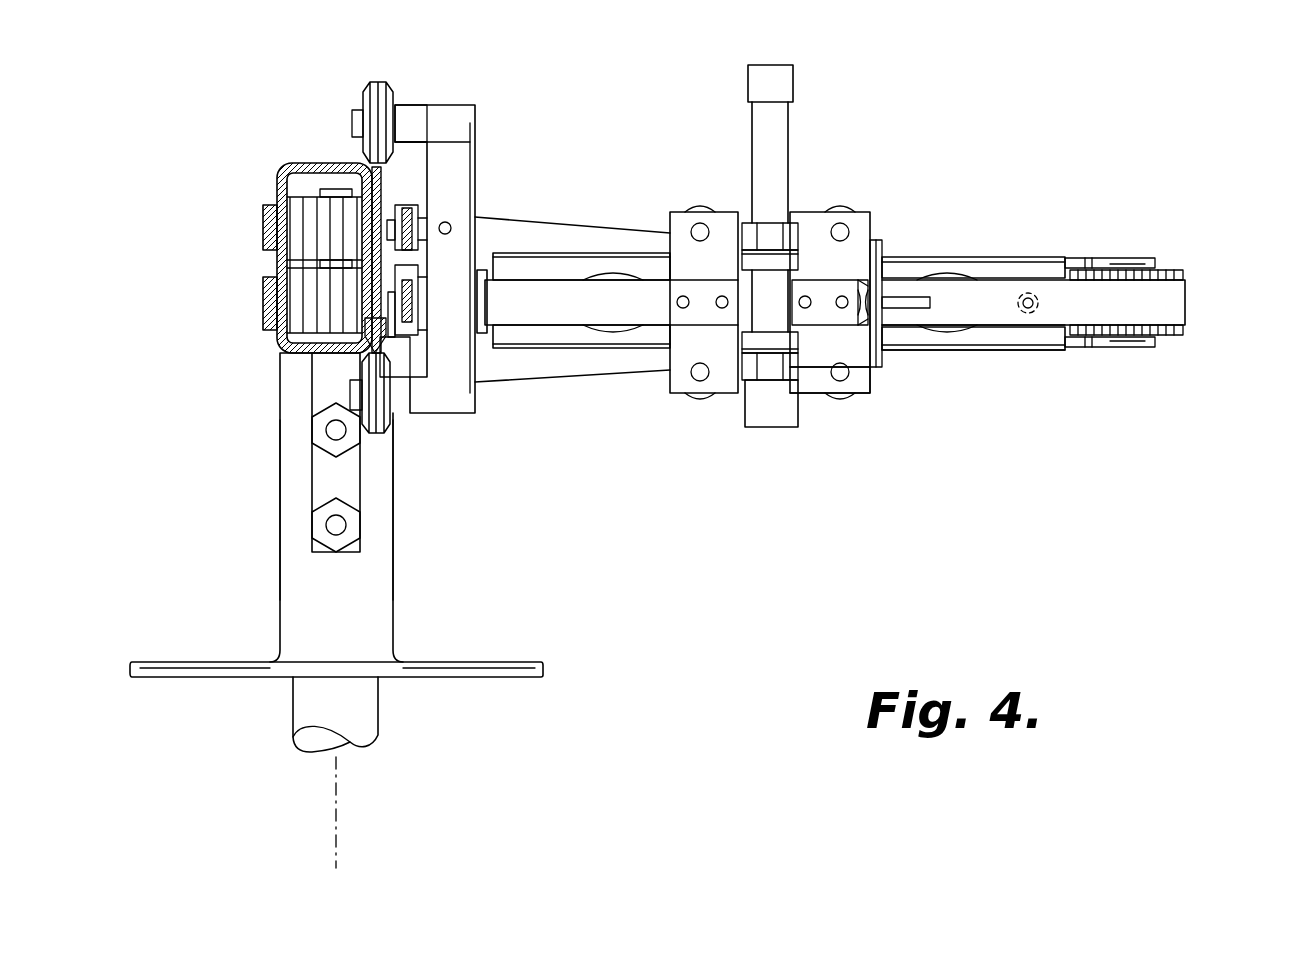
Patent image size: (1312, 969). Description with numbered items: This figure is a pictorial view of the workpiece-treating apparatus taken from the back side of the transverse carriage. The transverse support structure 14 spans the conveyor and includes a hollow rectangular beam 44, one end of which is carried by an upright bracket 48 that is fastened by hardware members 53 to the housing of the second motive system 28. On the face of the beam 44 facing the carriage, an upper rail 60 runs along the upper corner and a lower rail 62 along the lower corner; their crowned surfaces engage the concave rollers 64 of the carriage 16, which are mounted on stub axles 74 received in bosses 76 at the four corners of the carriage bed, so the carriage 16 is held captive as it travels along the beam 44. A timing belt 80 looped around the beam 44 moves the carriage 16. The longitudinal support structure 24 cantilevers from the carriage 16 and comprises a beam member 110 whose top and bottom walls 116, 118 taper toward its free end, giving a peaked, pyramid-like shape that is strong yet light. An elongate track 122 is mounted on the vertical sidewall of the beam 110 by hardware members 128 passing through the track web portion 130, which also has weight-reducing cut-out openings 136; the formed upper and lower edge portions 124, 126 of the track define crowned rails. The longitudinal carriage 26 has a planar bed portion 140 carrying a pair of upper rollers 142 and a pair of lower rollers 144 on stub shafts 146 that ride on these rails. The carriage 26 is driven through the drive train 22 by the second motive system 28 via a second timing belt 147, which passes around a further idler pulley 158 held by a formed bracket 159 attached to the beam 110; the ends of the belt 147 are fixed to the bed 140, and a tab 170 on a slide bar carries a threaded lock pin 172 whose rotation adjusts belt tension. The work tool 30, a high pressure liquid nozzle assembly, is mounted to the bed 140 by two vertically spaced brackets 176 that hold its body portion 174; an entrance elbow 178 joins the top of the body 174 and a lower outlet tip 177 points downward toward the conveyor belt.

The transverse support structure 14 is at (277, 164).
The carriage 16 is at (448, 102).
The drive train 22 is at (252, 257).
The longitudinal support structure 24 is at (321, 155).
The longitudinal carriage 26 is at (872, 408).
The second motive system 28 is at (400, 548).
The work tool 30 is at (805, 102).
The beam structure 44 is at (277, 187).
The bracket 48 is at (320, 395).
The hardware members 53 is at (352, 513).
The upper rail 60 is at (383, 188).
The lower rail 62 is at (383, 338).
The rollers 64 is at (381, 87).
The stub axles 74 is at (358, 115).
The bosses 76 is at (428, 110).
The timing belt 80 is at (263, 227).
The beam member 110 is at (577, 360).
The top wall 116 is at (612, 225).
The bottom wall 118 is at (604, 373).
The track 122 is at (1043, 350).
The upper edge portion 124 is at (1003, 257).
The lower edge portion 126 is at (910, 347).
The hardware members 128 is at (1040, 297).
The track web portion 130 is at (1007, 333).
The cut-out openings 136 is at (948, 277).
The bed portion 140 is at (842, 262).
The upper rollers 142 is at (840, 212).
The lower rollers 144 is at (838, 398).
The stub shafts 146 is at (697, 230).
The timing belt 147 is at (263, 298).
The idler pulley 158 is at (1185, 270).
The bracket 159 is at (1150, 258).
The tab 170 is at (837, 400).
The lock pin 172 is at (343, 618).
The body portion 174 is at (777, 162).
The brackets 176 is at (747, 372).
The lower outlet tip 177 is at (762, 430).
The entrance elbow 178 is at (757, 85).